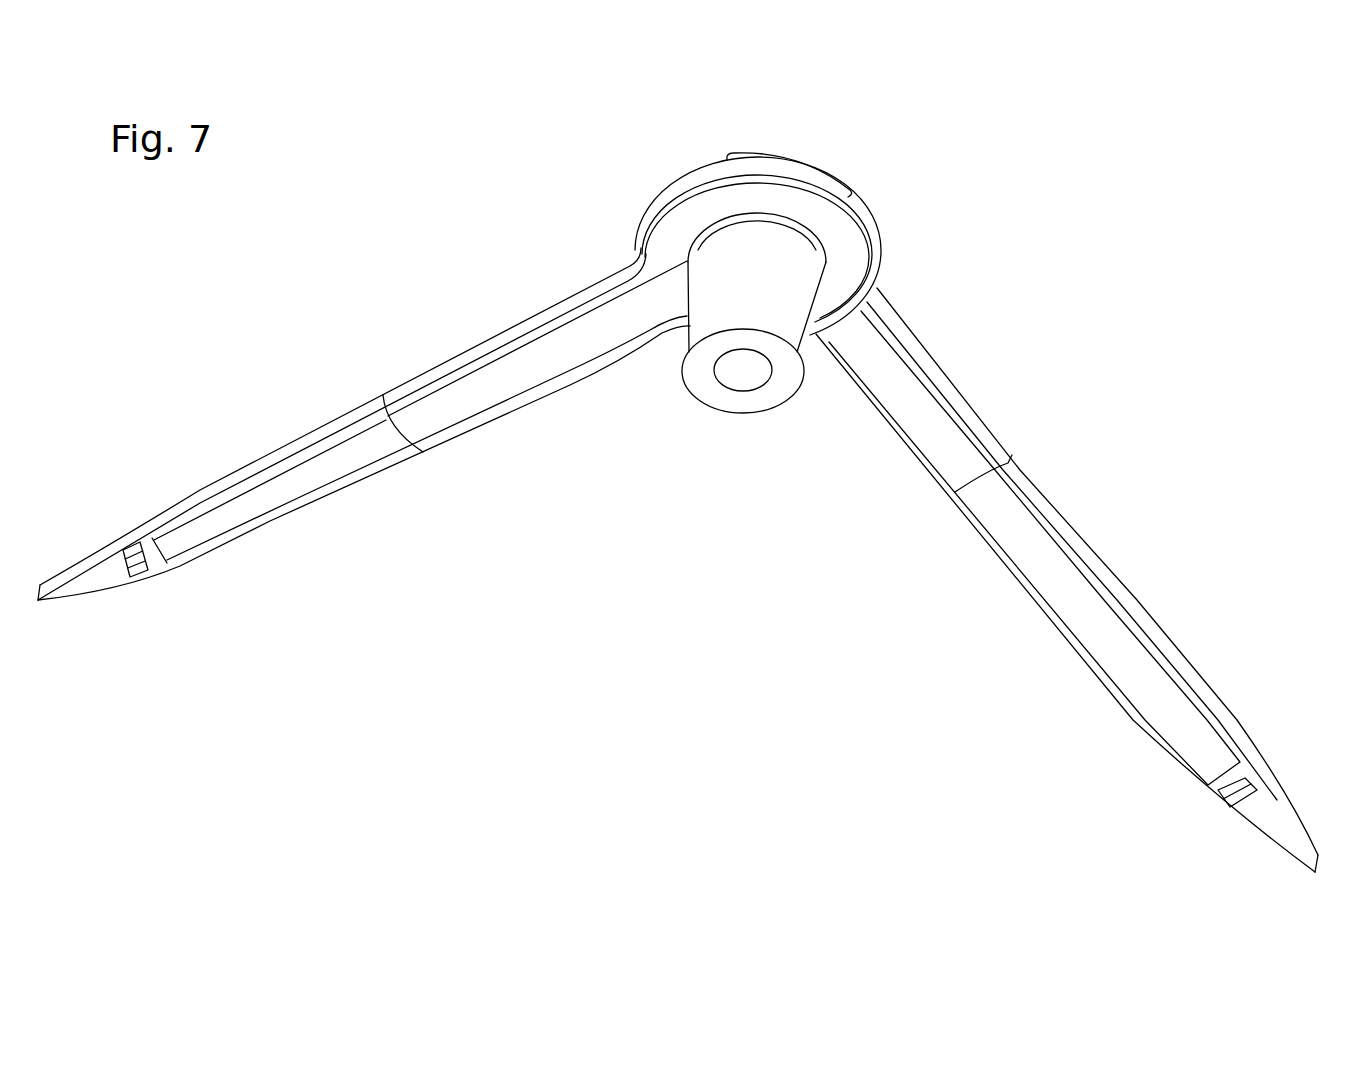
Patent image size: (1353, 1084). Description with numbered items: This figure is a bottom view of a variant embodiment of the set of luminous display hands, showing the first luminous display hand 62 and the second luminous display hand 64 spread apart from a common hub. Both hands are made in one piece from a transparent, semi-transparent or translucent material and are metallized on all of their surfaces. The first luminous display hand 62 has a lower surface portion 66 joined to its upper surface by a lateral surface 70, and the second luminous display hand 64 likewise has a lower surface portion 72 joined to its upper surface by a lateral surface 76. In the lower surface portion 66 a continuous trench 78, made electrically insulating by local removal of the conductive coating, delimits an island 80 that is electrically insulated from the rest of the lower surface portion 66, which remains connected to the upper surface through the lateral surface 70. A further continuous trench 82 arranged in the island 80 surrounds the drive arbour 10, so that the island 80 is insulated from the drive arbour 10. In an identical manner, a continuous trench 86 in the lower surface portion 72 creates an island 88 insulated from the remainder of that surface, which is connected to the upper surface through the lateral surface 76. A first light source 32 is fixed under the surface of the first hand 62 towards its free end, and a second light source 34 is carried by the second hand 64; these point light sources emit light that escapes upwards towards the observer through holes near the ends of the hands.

The drive arbour 10 is at (723, 297).
The first light source 32 is at (152, 580).
The second light source 34 is at (1259, 780).
The first luminous display hand 62 is at (516, 310).
The second luminous display hand 64 is at (1067, 422).
The lower surface portion 66 is at (88, 581).
The lateral surface 70 is at (457, 358).
The lower surface portion 72 is at (1256, 824).
The lateral surface 76 is at (1070, 543).
The continuous trench 78 is at (173, 520).
The island 80 is at (234, 517).
The continuous trench 82 is at (773, 212).
The continuous trench 86 is at (958, 458).
The island 88 is at (1093, 623).